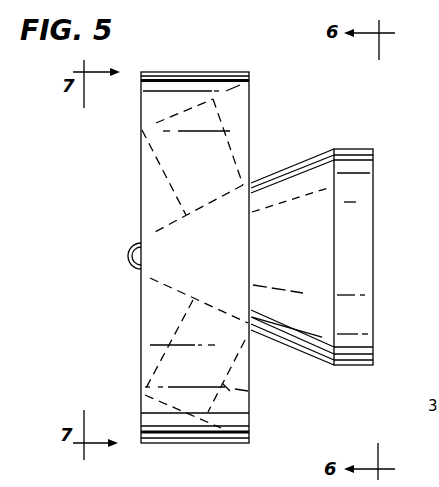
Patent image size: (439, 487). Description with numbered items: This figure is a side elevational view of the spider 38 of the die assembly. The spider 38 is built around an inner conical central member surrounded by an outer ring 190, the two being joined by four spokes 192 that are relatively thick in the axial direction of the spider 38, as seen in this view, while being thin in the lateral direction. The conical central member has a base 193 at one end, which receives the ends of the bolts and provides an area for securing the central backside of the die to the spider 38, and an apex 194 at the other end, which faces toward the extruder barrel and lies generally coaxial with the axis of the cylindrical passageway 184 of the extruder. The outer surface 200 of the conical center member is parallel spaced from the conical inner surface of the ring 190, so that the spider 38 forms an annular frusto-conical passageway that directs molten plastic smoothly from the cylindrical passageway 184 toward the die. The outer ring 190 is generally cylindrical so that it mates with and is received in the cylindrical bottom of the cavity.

The spider 38 is at (392, 140).
The cylindrical passageway 184 is at (298, 187).
The outer ring 190 is at (143, 326).
The spokes 192 is at (251, 392).
The base 193 is at (376, 248).
The apex 194 is at (131, 259).
The outer surface 200 is at (311, 253).